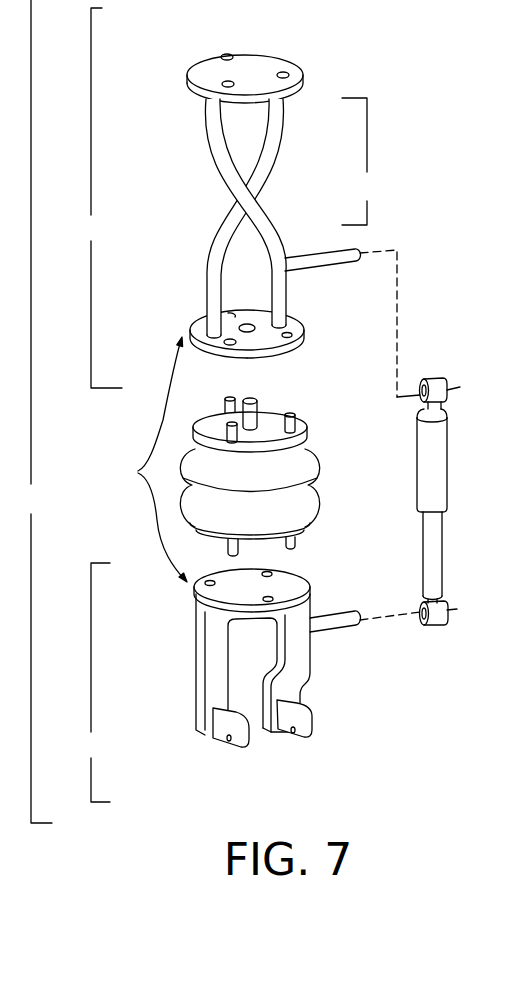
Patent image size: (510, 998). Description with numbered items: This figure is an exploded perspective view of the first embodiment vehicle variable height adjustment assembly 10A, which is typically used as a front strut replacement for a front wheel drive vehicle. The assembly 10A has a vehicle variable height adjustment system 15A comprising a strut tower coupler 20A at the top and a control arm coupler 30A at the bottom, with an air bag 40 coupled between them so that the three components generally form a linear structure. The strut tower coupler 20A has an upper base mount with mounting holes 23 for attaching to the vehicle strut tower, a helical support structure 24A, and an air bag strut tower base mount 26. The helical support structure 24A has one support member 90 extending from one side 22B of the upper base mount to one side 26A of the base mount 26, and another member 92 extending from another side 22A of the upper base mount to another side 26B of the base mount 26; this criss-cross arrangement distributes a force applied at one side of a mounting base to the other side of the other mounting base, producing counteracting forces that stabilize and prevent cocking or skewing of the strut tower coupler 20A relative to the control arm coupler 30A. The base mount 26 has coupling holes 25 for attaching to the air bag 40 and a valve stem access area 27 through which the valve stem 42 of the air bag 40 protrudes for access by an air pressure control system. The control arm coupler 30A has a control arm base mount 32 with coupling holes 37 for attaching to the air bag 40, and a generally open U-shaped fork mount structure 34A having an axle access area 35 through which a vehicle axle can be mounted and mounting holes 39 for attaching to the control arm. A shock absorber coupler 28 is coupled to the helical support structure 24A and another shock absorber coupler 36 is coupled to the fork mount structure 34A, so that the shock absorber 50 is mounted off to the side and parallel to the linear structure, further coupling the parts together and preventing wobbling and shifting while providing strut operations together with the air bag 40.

The vehicle variable height adjustment assembly 10A is at (30, 411).
The vehicle variable height adjustment system 15A is at (138, 459).
The strut tower coupler 20A is at (96, 198).
The side of base mount 22A is at (193, 88).
The side of base mount 22B is at (293, 67).
The mounting holes 23 is at (283, 71).
The helical support structure 24A is at (366, 161).
The coupling holes 25 is at (287, 338).
The air bag strut tower base mount 26 is at (302, 342).
The side of base mount 26A is at (202, 332).
The side of base mount 26B is at (293, 327).
The valve stem access area 27 is at (247, 324).
The shock absorber coupler 28 is at (307, 262).
The control arm coupler 30A is at (89, 682).
The control arm base mount 32 is at (296, 576).
The fork mount structure 34A is at (218, 688).
The axle access area 35 is at (236, 648).
The shock absorber coupler 36 is at (338, 625).
The coupling holes 37 is at (274, 598).
The mounting holes 39 is at (293, 737).
The air bag 40 is at (310, 455).
The valve stem 42 is at (252, 413).
The shock absorber 50 is at (437, 480).
The support member 90 is at (273, 138).
The support member 92 is at (218, 143).